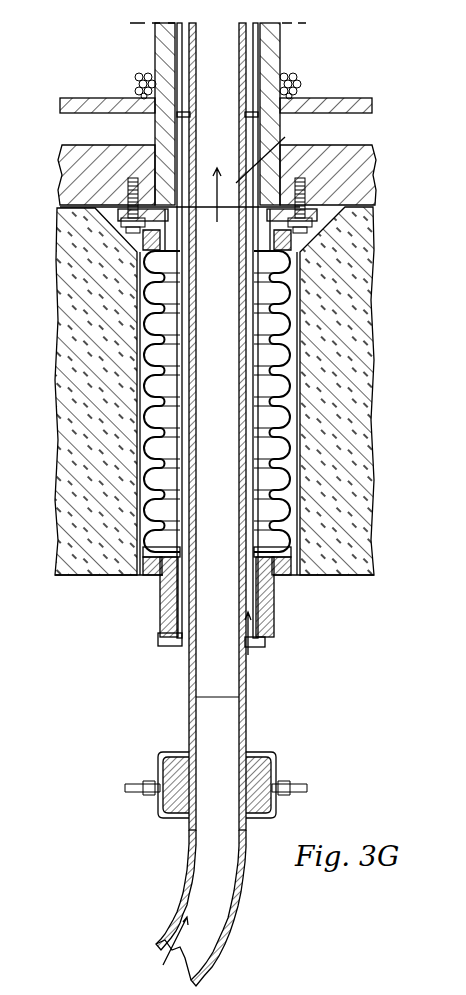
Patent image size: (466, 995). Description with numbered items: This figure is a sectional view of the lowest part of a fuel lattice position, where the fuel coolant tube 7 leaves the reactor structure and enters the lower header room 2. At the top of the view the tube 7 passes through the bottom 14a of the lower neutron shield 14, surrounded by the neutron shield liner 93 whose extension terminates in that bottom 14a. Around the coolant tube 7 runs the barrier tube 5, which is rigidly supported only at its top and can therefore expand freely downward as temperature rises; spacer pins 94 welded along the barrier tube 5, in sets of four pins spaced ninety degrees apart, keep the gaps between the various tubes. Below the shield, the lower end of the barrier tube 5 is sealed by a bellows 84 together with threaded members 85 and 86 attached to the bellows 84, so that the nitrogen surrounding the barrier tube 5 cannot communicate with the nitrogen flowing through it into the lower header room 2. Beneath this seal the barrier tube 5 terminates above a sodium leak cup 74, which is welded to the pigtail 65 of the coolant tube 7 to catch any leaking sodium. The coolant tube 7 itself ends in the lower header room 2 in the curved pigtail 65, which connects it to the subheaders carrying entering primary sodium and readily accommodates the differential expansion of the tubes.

The lower neutron shield 14 is at (62, 83).
The bottom of lower neutron shield 14a is at (362, 175).
The neutron shield liner 93 is at (282, 40).
The spacer pins 94 is at (249, 112).
The fuel coolant tube 7 is at (247, 68).
The bellows 84 is at (292, 492).
The barrier tube 5 is at (256, 570).
The threaded member 86 is at (274, 606).
The threaded member 85 is at (262, 646).
The lower header room 2 is at (72, 690).
The sodium leak cup 74 is at (272, 765).
The pigtail 65 is at (238, 880).